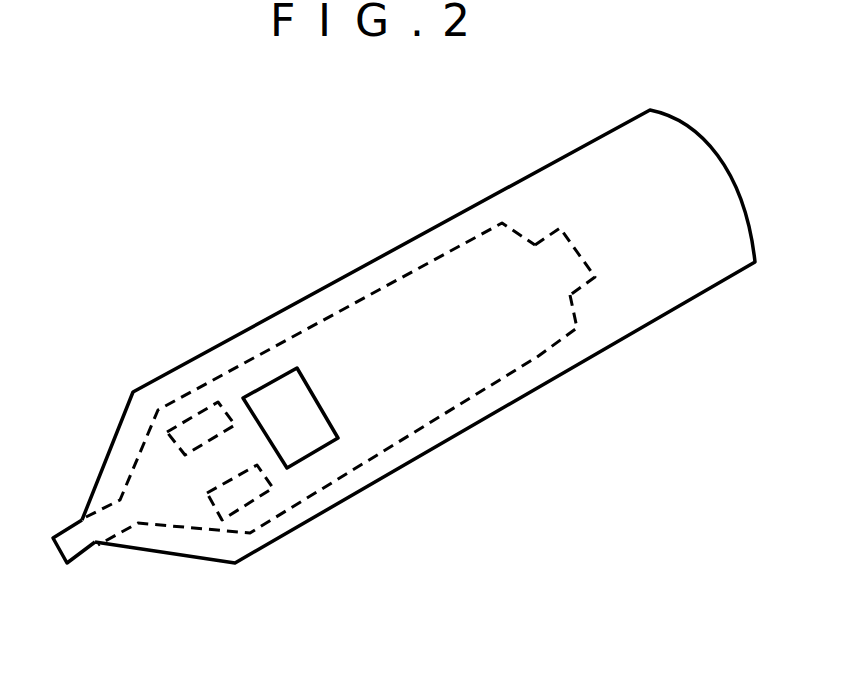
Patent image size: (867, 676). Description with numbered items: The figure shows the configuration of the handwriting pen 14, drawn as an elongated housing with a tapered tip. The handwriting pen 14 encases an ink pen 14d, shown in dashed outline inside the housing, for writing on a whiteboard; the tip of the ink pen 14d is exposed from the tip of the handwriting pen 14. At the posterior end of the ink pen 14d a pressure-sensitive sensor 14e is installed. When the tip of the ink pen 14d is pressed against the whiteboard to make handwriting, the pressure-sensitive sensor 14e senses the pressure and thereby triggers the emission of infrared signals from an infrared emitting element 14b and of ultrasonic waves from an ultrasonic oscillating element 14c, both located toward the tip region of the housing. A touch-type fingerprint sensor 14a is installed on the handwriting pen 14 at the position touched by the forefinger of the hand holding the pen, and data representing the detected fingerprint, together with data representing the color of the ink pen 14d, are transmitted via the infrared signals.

The handwriting pen 14 is at (587, 362).
The touch-type fingerprint sensor 14a is at (277, 405).
The infrared emitting element 14b is at (195, 405).
The ultrasonic oscillating element 14c is at (247, 507).
The ink pen 14d is at (393, 282).
The pressure-sensitive sensor 14e is at (578, 252).